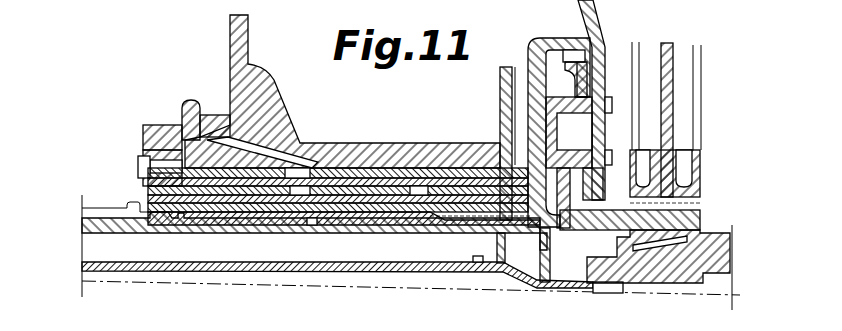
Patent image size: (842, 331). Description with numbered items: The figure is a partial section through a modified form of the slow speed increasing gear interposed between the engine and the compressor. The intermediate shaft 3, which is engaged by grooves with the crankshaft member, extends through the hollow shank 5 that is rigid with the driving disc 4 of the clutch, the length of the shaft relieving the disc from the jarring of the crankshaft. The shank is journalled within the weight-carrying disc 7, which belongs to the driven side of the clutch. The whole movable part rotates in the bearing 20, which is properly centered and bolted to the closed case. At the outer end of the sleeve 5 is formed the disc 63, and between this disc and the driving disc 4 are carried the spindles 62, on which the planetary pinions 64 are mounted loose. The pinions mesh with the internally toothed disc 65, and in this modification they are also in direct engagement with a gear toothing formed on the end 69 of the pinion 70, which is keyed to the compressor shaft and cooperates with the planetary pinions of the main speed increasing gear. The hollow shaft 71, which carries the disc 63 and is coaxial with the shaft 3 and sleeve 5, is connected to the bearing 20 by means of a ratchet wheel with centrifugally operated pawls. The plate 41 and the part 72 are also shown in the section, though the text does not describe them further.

The intermediate shaft 3 is at (110, 227).
The driving disc 4 is at (600, 48).
The hollow shank 5 is at (380, 208).
The weight-carrying disc 7 is at (508, 78).
The bearing 20 is at (197, 157).
The plate 41 is at (668, 127).
The spindles 62 is at (582, 133).
The disc 63 is at (555, 117).
The planetary pinions 64 is at (582, 80).
The internally toothed disc 65 is at (572, 50).
The end of pinion 69 is at (585, 216).
The pinion 70 is at (678, 228).
The tubular shaft 71 is at (323, 160).
The bolt 72 is at (155, 157).